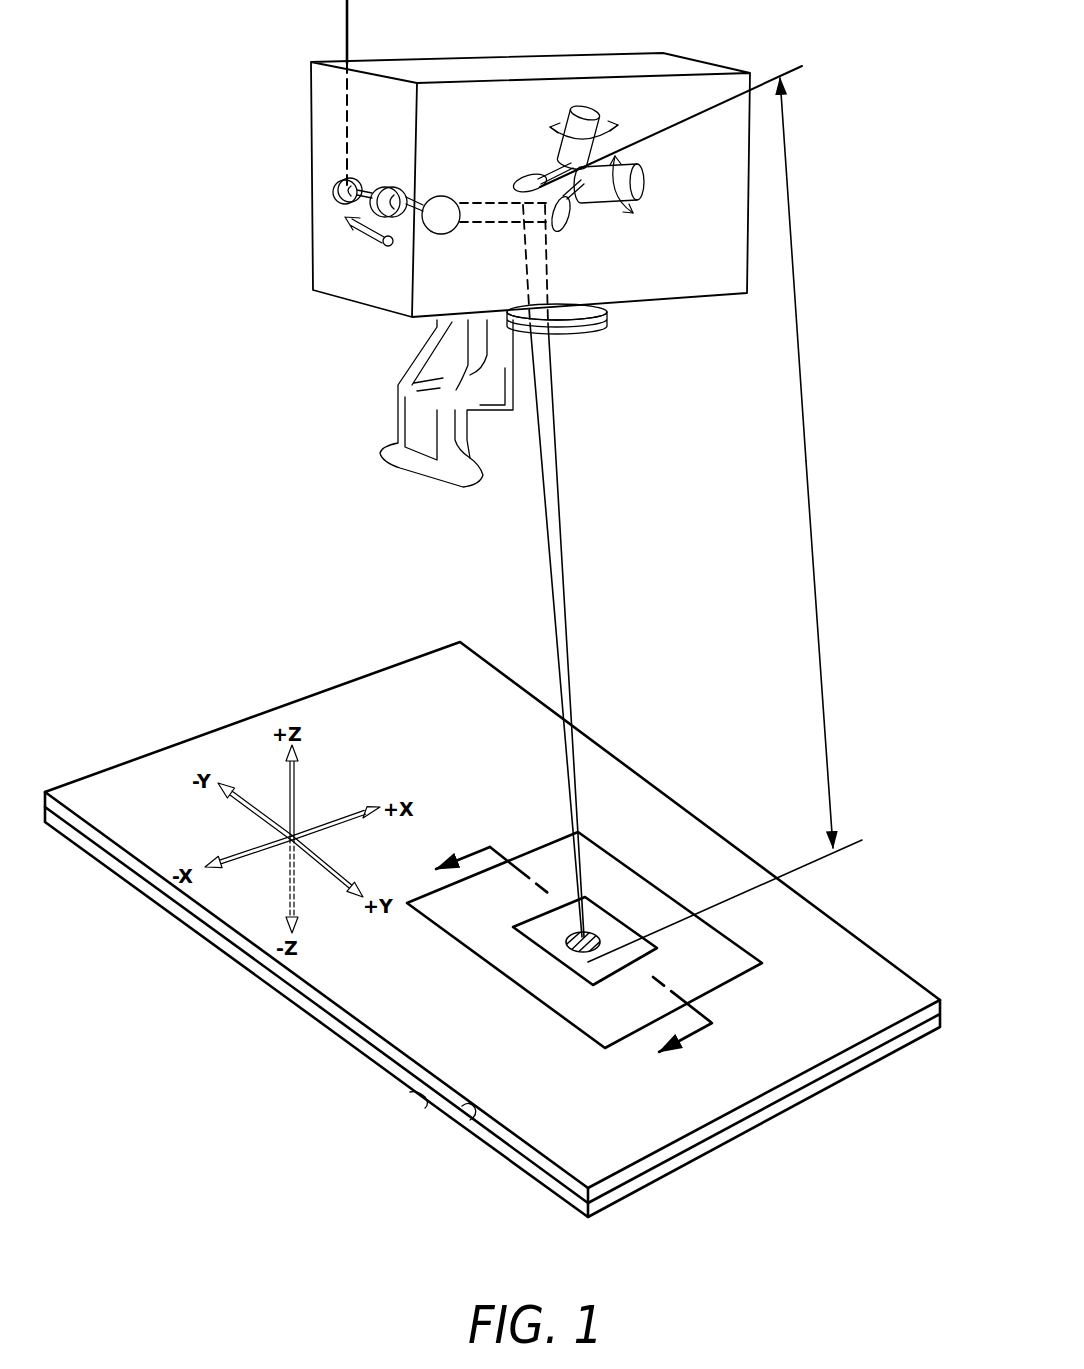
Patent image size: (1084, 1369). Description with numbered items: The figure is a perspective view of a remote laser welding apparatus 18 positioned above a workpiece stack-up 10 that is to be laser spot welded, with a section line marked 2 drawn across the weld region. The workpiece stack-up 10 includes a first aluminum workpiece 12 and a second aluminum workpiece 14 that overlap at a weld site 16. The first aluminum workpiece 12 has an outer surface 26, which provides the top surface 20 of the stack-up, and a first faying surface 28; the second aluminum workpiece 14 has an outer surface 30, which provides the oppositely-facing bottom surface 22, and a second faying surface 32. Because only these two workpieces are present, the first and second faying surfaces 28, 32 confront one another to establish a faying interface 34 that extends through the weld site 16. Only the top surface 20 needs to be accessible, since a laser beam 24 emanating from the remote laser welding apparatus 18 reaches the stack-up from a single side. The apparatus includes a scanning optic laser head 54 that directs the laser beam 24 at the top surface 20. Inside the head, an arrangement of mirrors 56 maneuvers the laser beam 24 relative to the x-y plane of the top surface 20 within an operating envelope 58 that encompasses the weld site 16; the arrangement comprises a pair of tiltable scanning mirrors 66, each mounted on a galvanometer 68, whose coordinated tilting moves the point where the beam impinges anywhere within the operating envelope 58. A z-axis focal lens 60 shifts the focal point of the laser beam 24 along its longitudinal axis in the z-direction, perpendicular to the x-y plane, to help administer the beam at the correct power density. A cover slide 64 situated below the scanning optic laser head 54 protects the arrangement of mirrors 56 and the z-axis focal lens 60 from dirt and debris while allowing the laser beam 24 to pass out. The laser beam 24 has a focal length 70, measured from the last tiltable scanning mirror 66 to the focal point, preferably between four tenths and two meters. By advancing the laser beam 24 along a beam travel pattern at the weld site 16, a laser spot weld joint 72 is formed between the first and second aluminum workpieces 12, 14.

The workpiece stack-up 10 is at (501, 935).
The first aluminum workpiece 12 is at (305, 990).
The second aluminum workpiece 14 is at (318, 1015).
The weld site 16 is at (522, 938).
The remote laser welding apparatus 18 is at (465, 243).
The top surface 20 is at (872, 1000).
The bottom surface 22 is at (800, 1113).
The laser beam 24 is at (558, 513).
The outer surface 26 is at (418, 1038).
The first faying surface 28 is at (430, 1105).
The outer surface 30 is at (515, 1167).
The second faying surface 32 is at (465, 1110).
The faying interface 34 is at (390, 1068).
The scanning optic laser head 54 is at (308, 121).
The arrangement of mirrors 56 is at (506, 177).
The operating envelope 58 is at (545, 843).
The z-axis focal lens 60 is at (405, 224).
The cover slide 64 is at (587, 323).
The tiltable scanning mirrors 66 is at (540, 174).
The galvanometer 68 is at (587, 127).
The focal length 70 is at (807, 428).
The laser spot weld joint 72 is at (560, 930).
The section line 2- 2 is at (572, 951).